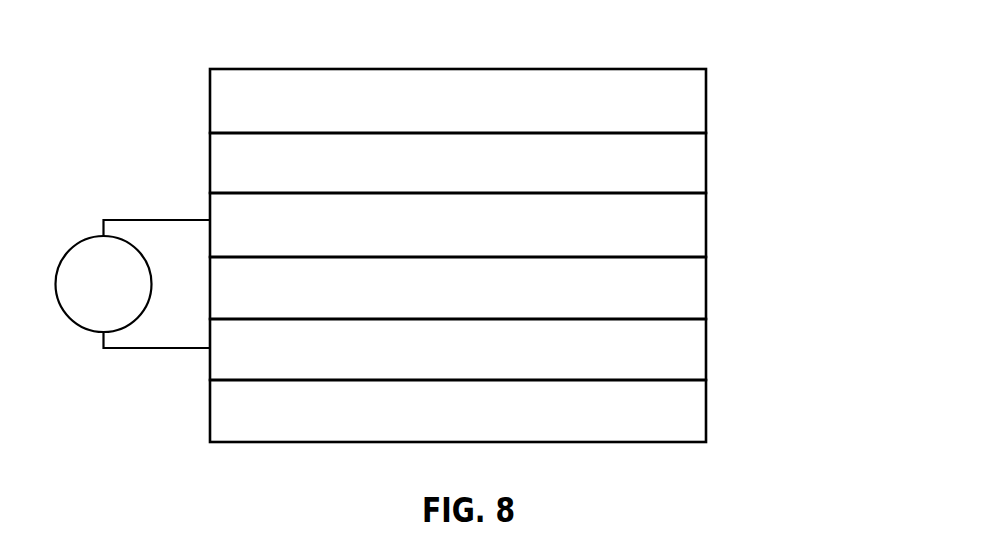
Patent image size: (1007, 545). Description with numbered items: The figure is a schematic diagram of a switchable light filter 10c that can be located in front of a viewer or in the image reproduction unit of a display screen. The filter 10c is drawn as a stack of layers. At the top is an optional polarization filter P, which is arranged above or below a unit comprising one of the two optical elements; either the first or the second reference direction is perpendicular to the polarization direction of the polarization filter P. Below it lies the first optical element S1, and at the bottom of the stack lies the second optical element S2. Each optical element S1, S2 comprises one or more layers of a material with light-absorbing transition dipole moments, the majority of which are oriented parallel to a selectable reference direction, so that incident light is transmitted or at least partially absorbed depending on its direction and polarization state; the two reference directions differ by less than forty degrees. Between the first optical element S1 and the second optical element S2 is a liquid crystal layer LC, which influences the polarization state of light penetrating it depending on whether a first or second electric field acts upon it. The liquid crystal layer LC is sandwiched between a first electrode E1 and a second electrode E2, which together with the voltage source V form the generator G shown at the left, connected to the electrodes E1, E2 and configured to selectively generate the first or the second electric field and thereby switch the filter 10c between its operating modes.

The switchable light filter 10c is at (458, 221).
The generator G is at (129, 248).
The polarization filter P is at (458, 101).
The first optical element S1 is at (458, 163).
The first electrode E1 is at (458, 225).
The liquid crystal layer LC is at (458, 288).
The second electrode E2 is at (458, 349).
The second optical element S2 is at (458, 411).
The voltage source V is at (152, 218).